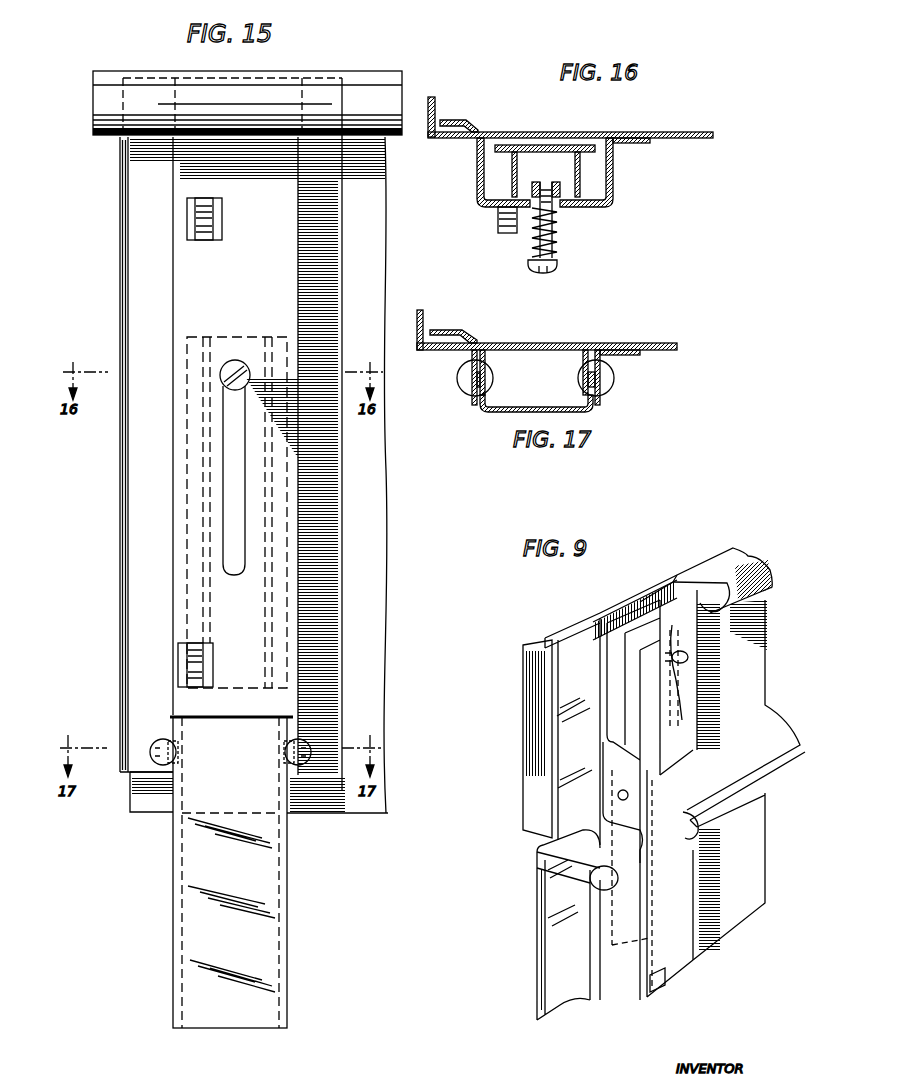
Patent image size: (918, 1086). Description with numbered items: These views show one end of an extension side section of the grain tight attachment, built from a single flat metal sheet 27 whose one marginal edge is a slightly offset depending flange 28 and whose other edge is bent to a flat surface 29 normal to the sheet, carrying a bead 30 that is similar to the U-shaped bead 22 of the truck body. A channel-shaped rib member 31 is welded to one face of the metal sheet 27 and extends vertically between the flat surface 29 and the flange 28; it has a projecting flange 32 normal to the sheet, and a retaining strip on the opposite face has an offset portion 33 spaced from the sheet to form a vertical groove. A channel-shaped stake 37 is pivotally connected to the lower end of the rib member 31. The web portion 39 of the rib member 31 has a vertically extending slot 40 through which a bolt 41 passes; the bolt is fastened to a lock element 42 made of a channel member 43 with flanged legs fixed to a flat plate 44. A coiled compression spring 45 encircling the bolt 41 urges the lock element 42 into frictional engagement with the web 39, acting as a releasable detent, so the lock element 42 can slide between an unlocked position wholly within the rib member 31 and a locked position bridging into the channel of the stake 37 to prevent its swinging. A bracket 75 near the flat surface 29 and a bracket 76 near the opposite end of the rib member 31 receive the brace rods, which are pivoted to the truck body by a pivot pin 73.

In FIG. 9, the bead 22 is at (613, 947).
In FIG. 15, the metal sheet 27 is at (370, 527).
In FIG. 16, the metal sheet 27 is at (678, 132).
In FIG. 17, the metal sheet 27 is at (657, 343).
In FIG. 9, the metal sheet 27 is at (753, 683).
In FIG. 15, the depending flange 28 is at (142, 805).
In FIG. 9, the flat surface 29 is at (713, 572).
In FIG. 15, the bead 30 is at (101, 108).
In FIG. 9, the bead 30 is at (763, 593).
In FIG. 15, the channel-shaped rib member 31 is at (140, 441).
In FIG. 16, the channel-shaped rib member 31 is at (622, 198).
In FIG. 17, the channel-shaped rib member 31 is at (602, 413).
In FIG. 9, the channel-shaped rib member 31 is at (537, 840).
In FIG. 16, the projecting flange 32 is at (435, 108).
In FIG. 17, the projecting flange 32 is at (423, 318).
In FIG. 9, the projecting flange 32 is at (535, 658).
In FIG. 16, the offset portion 33 is at (458, 123).
In FIG. 17, the offset portion 33 is at (463, 332).
In FIG. 9, the offset portion 33 is at (555, 633).
In FIG. 15, the channel-shaped stake 37 is at (268, 950).
In FIG. 17, the channel-shaped stake 37 is at (490, 412).
In FIG. 15, the web portion 39 is at (270, 279).
In FIG. 15, the vertically extending slot 40 is at (232, 508).
In FIG. 9, the vertically extending slot 40 is at (675, 702).
In FIG. 15, the bolt 41 is at (226, 362).
In FIG. 16, the bolt 41 is at (553, 268).
In FIG. 9, the bolt 41 is at (690, 658).
In FIG. 15, the lock element 42 is at (262, 636).
In FIG. 16, the lock element 42 is at (506, 185).
In FIG. 9, the lock element 42 is at (633, 650).
In FIG. 16, the channel member 43 is at (577, 183).
In FIG. 16, the flat plate 44 is at (542, 147).
In FIG. 16, the coiled compression spring 45 is at (557, 233).
In FIG. 15, the pivot pin 73 is at (157, 738).
In FIG. 17, the pivot pin 73 is at (460, 385).
In FIG. 15, the bracket 75 is at (213, 212).
In FIG. 15, the bracket 76 is at (204, 662).
In FIG. 16, the bracket 76 is at (517, 232).